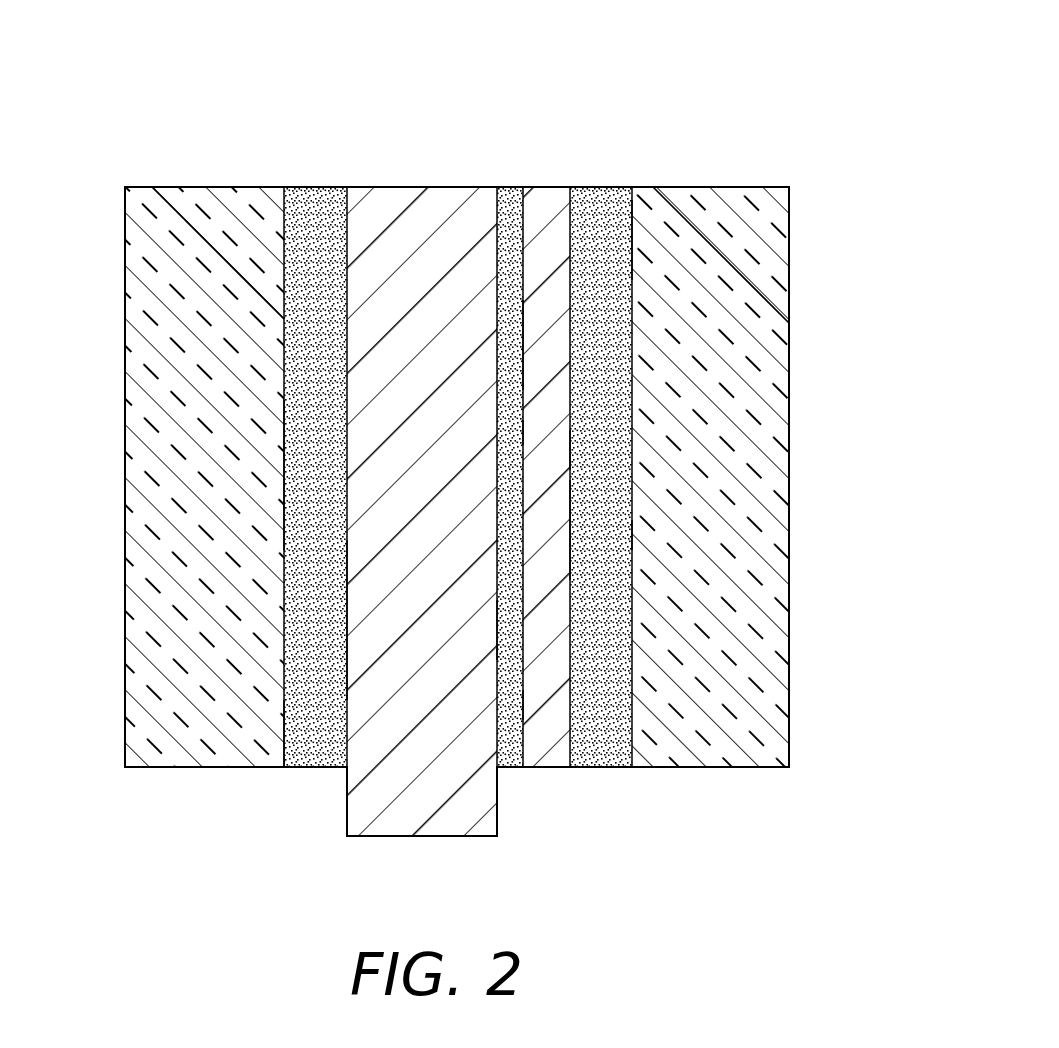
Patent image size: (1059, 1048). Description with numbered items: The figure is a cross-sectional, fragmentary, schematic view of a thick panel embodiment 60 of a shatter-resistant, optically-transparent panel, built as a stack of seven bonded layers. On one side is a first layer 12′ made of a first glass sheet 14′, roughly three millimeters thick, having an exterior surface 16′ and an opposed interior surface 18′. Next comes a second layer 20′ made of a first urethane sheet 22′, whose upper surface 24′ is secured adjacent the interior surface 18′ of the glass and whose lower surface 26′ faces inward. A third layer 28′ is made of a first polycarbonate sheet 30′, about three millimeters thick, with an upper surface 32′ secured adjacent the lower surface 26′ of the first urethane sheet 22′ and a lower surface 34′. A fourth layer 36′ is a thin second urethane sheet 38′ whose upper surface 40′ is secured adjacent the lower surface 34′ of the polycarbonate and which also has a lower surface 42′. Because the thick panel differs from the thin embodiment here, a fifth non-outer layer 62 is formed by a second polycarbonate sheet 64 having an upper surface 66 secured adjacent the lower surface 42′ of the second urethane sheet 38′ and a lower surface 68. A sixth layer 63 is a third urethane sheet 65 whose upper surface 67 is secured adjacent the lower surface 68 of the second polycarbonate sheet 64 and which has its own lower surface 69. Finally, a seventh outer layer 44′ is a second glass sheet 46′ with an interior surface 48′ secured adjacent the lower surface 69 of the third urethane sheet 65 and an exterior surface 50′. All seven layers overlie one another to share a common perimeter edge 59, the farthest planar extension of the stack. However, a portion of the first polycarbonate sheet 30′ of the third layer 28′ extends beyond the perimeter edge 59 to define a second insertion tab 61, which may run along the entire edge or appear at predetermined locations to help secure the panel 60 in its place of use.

The thick panel embodiment 60 is at (780, 87).
The perimeter edge 59 is at (162, 187).
The first layer 12′ is at (213, 187).
The first glass sheet 14′ is at (194, 366).
The exterior surface 16′ is at (127, 263).
The interior surface 18′ is at (283, 540).
The second layer 20′ is at (300, 187).
The first urethane sheet 22′ is at (306, 716).
The upper surface 24′ is at (283, 443).
The lower surface 26′ is at (347, 688).
The third layer 28′ is at (433, 187).
The first polycarbonate sheet 30′ is at (437, 819).
The upper surface 32′ is at (343, 574).
The lower surface 34′ is at (523, 707).
The fourth layer 36′ is at (510, 187).
The second urethane sheet 38′ is at (499, 746).
The upper surface 40′ is at (495, 654).
The lower surface 42′ is at (523, 433).
The seventh outer layer 44′ is at (693, 187).
The second glass sheet 46′ is at (688, 322).
The interior surface 48′ is at (632, 270).
The exterior surface 50′ is at (790, 239).
The second insertion tab 61 is at (347, 810).
The fifth non-outer layer 62 is at (560, 187).
The sixth layer 63 is at (608, 187).
The second polycarbonate sheet 64 is at (540, 732).
The third urethane sheet 65 is at (584, 734).
The upper surface 66 is at (518, 380).
The upper surface 67 is at (567, 575).
The lower surface 68 is at (572, 450).
The lower surface 69 is at (633, 533).